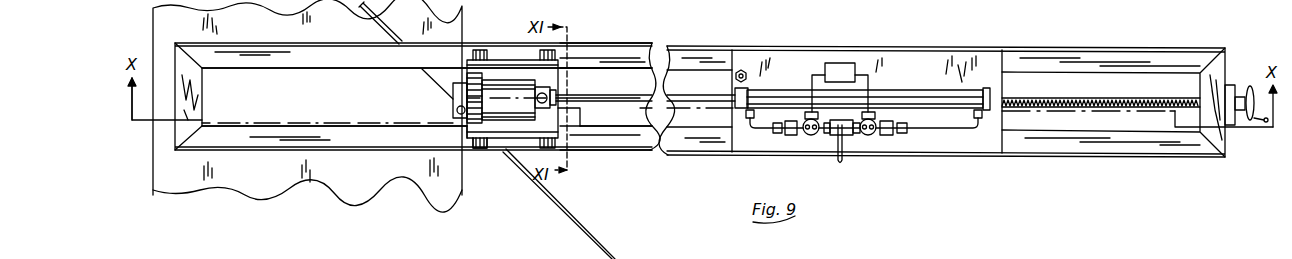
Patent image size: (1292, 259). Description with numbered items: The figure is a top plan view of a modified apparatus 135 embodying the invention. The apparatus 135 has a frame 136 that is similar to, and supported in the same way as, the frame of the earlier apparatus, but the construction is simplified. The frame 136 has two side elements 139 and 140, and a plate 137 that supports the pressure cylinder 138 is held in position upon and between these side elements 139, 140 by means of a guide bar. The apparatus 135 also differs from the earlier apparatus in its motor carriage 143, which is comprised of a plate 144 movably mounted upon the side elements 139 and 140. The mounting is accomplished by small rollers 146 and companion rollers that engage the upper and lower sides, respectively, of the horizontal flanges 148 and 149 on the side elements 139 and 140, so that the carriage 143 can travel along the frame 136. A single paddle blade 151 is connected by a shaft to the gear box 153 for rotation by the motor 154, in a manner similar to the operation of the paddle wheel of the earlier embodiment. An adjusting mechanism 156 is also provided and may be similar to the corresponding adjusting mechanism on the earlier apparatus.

The modified apparatus 135 is at (373, 173).
The frame 136 is at (270, 152).
The plate 137 is at (740, 55).
The pressure cylinder 138 is at (902, 93).
The side element 139 is at (637, 53).
The side element 140 is at (638, 142).
The motor carriage 143 is at (500, 57).
The plate 144 is at (478, 127).
The small rollers 146 is at (481, 148).
The horizontal flange 148 is at (350, 62).
The horizontal flange 149 is at (253, 133).
The paddle blade 151 is at (560, 212).
The gear box 153 is at (453, 108).
The motor 154 is at (547, 73).
The adjusting mechanism 156 is at (1240, 80).